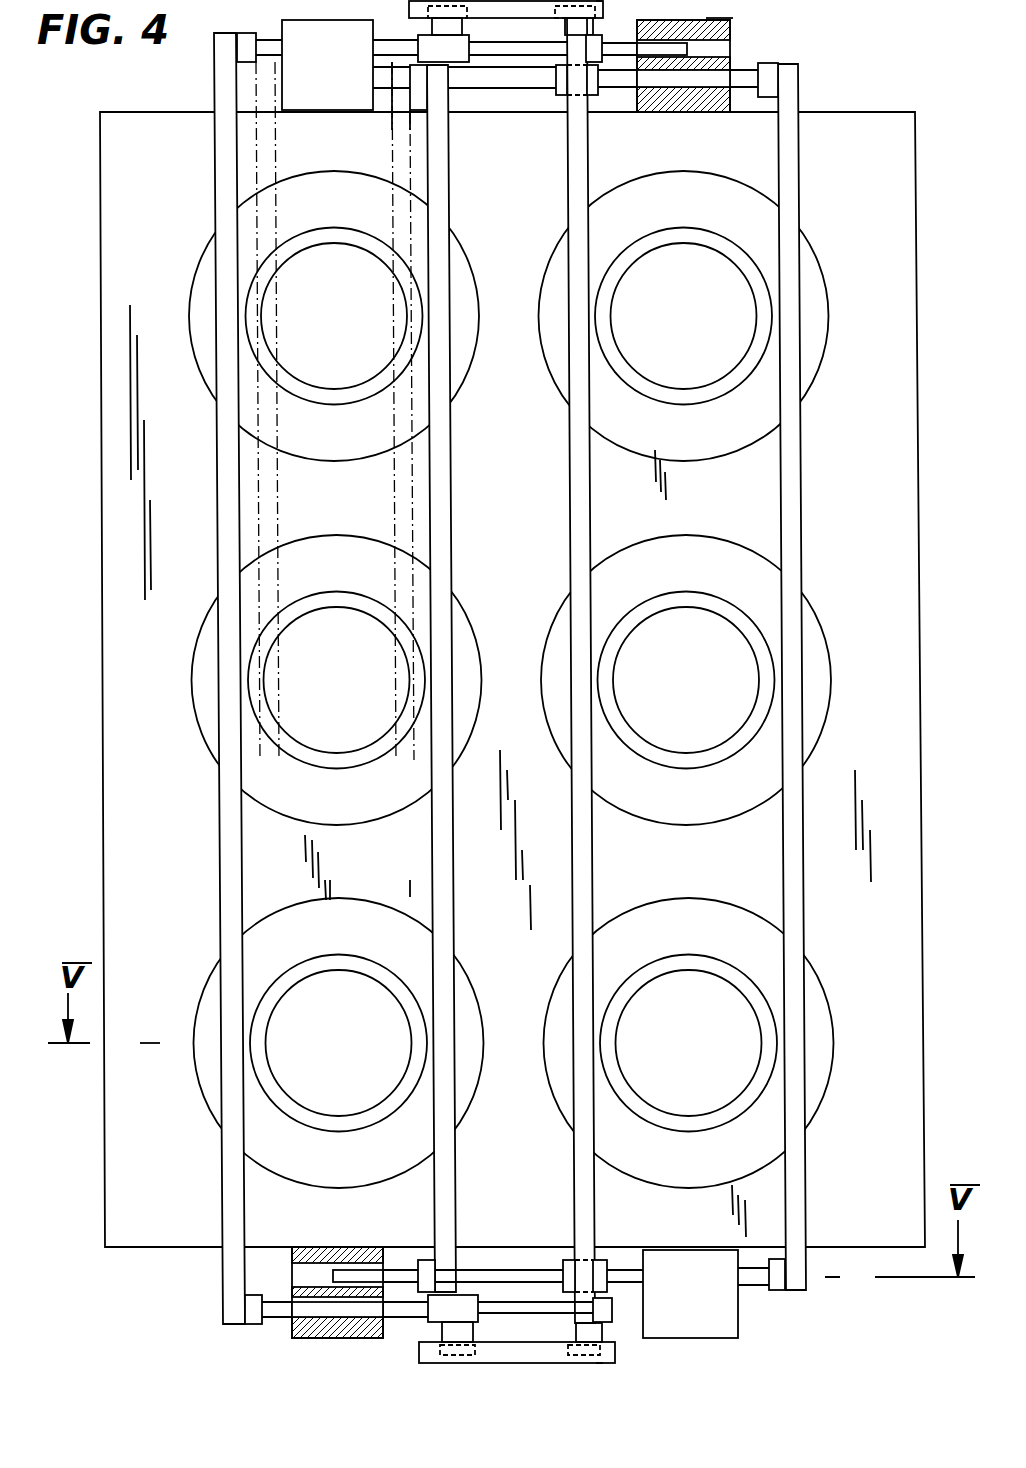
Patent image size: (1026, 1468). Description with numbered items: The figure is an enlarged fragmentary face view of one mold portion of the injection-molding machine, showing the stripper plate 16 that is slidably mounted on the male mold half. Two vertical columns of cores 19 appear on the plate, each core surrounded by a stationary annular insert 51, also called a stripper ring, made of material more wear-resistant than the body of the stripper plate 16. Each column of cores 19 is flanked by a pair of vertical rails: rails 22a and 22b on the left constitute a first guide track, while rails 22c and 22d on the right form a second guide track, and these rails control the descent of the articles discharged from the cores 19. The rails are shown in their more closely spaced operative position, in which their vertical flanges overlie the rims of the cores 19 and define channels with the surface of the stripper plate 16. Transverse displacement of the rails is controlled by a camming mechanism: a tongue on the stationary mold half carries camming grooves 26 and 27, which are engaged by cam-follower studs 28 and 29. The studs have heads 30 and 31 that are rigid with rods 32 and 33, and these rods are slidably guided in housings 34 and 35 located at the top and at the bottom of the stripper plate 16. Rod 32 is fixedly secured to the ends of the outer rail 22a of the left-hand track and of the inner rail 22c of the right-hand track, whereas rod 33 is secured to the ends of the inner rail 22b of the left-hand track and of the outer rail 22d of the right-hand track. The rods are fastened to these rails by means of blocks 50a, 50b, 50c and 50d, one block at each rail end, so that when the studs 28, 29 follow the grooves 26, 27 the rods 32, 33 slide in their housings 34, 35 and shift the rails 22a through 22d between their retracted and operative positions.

The stripper plate 16 is at (860, 130).
The cores 19 is at (368, 356).
The outer rail of the left-hand guide track 22a is at (258, 505).
The inner rail of the left-hand guide track 22b is at (408, 522).
The inner rail of the right-hand guide track 22c is at (582, 552).
The outer rail of the right-hand guide track 22d is at (793, 552).
The camming groove 26 is at (407, 14).
The camming groove 27 is at (615, 1345).
The cam-follower stud 28 is at (462, 25).
The cam-follower stud 29 is at (567, 23).
The head 30 is at (465, 1305).
The head 31 is at (560, 92).
The rod 32 is at (392, 50).
The rod 33 is at (745, 72).
The housing 34 is at (330, 14).
The housing 35 is at (707, 22).
The block 50a is at (243, 50).
The block 50b is at (420, 92).
The block 50c is at (600, 50).
The block 50d is at (770, 90).
The stationary annular inserts 51 is at (711, 803).